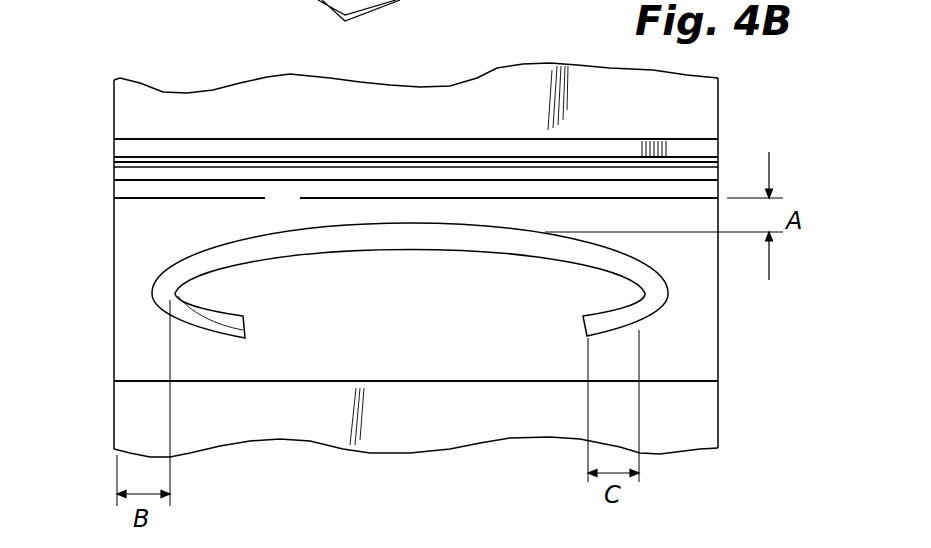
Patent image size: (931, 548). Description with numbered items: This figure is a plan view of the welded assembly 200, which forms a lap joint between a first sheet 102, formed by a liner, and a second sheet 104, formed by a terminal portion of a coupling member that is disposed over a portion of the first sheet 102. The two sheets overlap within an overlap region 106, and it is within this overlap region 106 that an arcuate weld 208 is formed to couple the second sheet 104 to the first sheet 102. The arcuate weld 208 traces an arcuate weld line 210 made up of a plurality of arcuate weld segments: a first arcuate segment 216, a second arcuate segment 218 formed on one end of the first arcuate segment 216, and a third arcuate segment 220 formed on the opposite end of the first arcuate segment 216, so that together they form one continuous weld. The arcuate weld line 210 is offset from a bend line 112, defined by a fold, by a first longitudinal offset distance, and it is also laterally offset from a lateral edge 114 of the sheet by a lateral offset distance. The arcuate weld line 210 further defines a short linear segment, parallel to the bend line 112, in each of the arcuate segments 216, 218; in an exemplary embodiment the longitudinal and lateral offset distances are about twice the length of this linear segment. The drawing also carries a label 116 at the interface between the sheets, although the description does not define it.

The welded assembly 200 is at (88, 127).
The overlap region 106 is at (285, 10).
The bend line 112 is at (131, 201).
The first arcuate segment 216 is at (385, 213).
The arcuate weld 208 is at (339, 248).
The arcuate weld line 210 is at (530, 241).
The third arcuate segment 220 is at (676, 293).
The second arcuate segment 218 is at (145, 300).
The second sheet 104 is at (436, 350).
The first sheet 102 is at (438, 432).
The interface line 116 is at (281, 382).
The lateral edge 114 is at (720, 428).